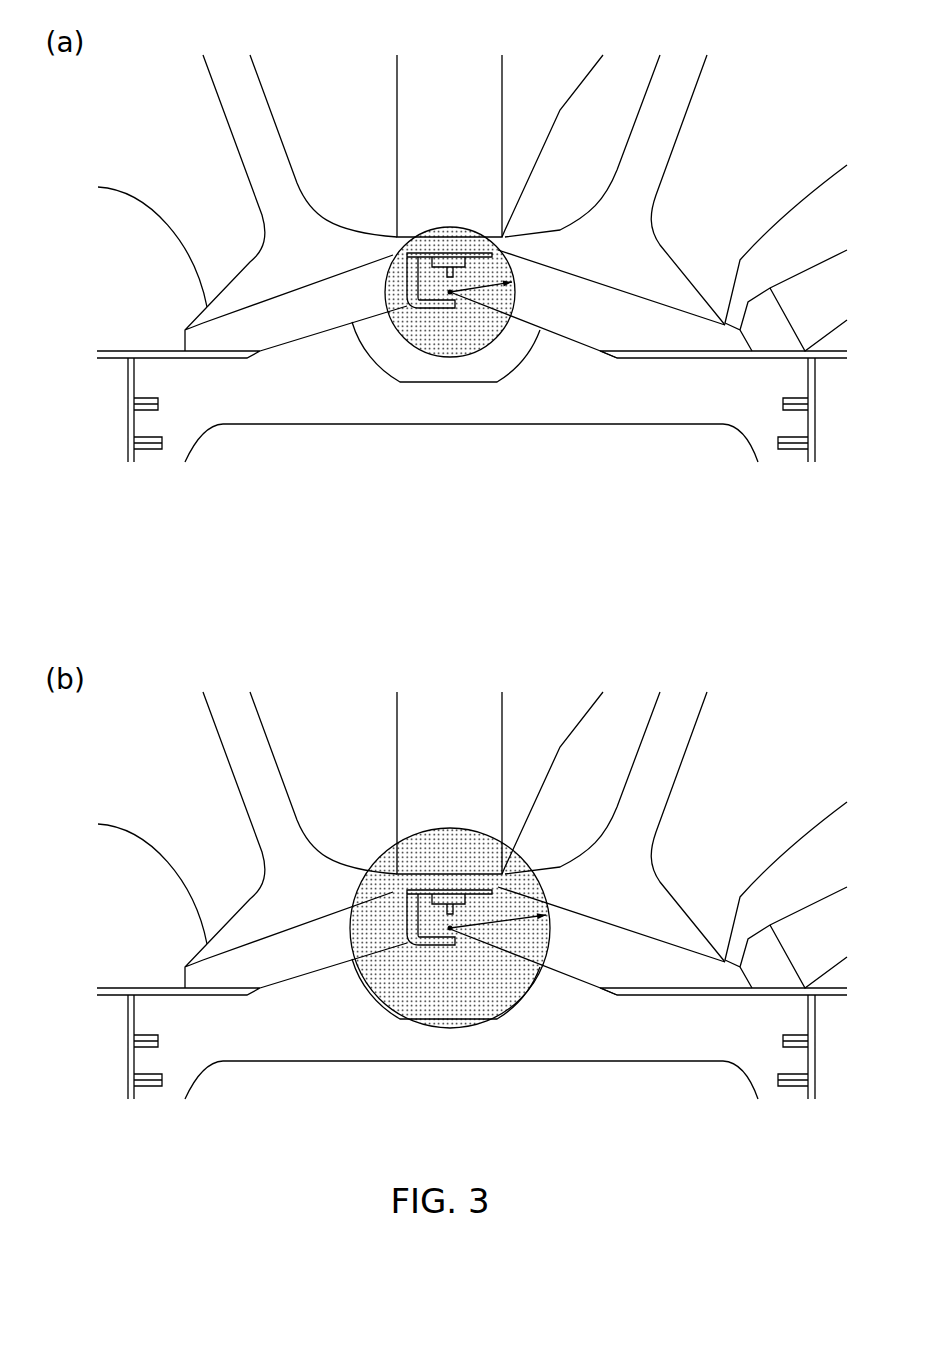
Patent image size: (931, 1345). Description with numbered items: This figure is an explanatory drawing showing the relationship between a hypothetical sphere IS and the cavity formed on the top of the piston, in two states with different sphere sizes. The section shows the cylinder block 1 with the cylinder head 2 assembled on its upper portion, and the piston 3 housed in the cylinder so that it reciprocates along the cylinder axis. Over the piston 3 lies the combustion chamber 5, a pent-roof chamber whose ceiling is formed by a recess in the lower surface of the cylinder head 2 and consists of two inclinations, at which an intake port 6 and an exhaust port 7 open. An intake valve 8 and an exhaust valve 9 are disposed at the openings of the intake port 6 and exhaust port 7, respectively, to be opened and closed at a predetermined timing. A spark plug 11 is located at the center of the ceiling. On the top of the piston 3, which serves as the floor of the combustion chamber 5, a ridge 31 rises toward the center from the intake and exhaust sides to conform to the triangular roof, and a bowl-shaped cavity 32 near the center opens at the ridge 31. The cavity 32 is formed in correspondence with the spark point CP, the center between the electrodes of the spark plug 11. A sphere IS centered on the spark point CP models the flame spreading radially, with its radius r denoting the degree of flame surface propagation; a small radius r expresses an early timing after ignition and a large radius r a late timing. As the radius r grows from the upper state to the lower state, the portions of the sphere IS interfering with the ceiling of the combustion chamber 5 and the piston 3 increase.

The cylinder block 1 is at (88, 421).
The cylinder head 2 is at (88, 293).
The piston 3 is at (552, 428).
The combustion chamber 5 is at (288, 327).
The intake port 6 is at (812, 190).
The exhaust port 7 is at (120, 189).
The intake valve 8 is at (686, 118).
The exhaust valve 9 is at (235, 118).
The spark plug 11 is at (447, 70).
The ridge 31 is at (582, 353).
The cavity 32 is at (372, 348).
The hypothetical sphere IS is at (513, 291).
The spark point CP is at (450, 292).
The radius r is at (498, 593).